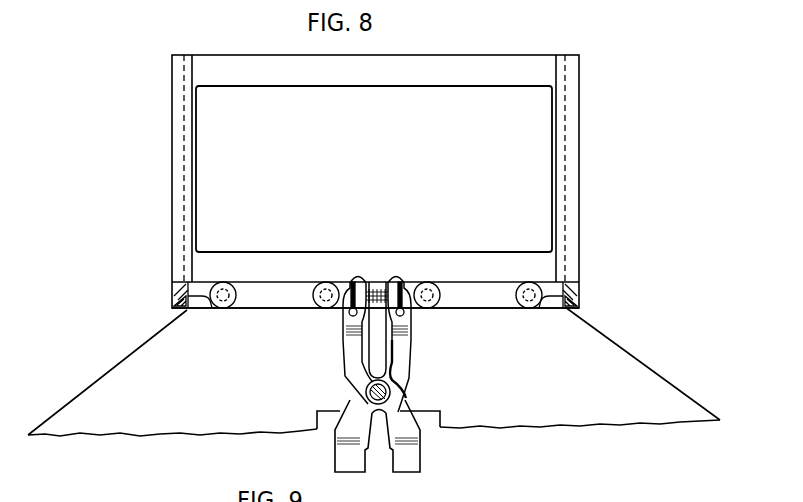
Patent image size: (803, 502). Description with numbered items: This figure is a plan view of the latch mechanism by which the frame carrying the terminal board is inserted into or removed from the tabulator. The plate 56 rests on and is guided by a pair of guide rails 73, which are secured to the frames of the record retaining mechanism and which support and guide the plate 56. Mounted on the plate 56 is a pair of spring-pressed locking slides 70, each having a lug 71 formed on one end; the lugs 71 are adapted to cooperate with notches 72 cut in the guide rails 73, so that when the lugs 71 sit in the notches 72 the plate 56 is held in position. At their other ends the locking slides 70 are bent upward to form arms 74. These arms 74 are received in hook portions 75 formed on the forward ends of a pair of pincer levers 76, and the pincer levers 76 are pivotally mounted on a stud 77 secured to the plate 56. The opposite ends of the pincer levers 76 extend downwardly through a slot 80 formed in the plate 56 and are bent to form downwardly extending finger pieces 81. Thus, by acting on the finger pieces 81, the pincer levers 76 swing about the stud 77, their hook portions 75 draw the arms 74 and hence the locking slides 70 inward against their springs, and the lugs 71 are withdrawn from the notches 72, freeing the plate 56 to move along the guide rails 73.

In FIG. 8, the plate 56 is at (105, 389).
In FIG. 8, the locking slides 70 is at (261, 300).
In FIG. 8, the lug 71 is at (182, 303).
In FIG. 8, the notches 72 is at (178, 289).
In FIG. 8, the guide rails 73 is at (172, 166).
In FIG. 8, the arms 74 is at (357, 282).
In FIG. 9, the arms 74 is at (385, 501).
In FIG. 8, the hook portions 75 is at (347, 332).
In FIG. 8, the pincer levers 76 is at (362, 352).
In FIG. 8, the stud 77 is at (366, 388).
In FIG. 8, the slot 80 is at (440, 412).
In FIG. 8, the finger pieces 81 is at (368, 455).